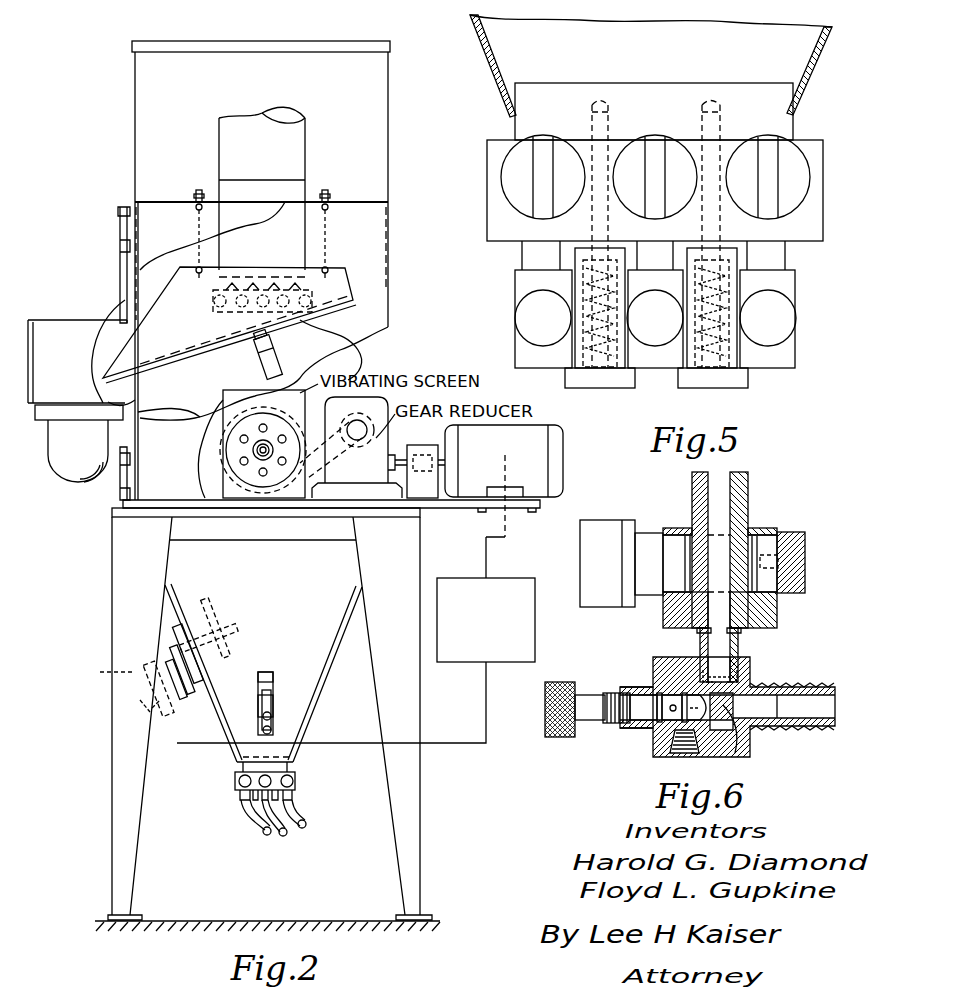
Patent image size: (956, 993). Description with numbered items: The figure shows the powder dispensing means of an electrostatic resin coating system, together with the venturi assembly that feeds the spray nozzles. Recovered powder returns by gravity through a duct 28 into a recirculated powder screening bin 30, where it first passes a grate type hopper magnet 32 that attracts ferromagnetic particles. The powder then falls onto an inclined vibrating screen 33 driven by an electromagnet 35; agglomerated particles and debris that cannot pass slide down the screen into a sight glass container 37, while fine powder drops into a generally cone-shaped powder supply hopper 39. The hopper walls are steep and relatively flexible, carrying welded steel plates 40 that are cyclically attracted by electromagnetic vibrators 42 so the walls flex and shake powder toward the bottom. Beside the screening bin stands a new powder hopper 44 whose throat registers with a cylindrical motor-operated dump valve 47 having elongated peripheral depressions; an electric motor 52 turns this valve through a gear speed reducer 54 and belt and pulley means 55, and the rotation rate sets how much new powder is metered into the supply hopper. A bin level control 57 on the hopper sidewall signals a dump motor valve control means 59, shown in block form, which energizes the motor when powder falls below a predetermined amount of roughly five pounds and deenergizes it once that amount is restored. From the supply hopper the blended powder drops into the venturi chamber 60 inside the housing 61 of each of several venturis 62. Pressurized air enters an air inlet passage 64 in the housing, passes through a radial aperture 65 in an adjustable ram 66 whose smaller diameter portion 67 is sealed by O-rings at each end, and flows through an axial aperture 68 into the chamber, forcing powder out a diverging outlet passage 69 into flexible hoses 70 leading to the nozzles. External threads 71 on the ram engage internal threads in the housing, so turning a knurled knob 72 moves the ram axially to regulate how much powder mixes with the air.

In FIG. 2, the duct 28 is at (306, 147).
In FIG. 2, the recirculated powder screening bin 30 is at (178, 240).
In FIG. 2, the grate type hopper magnet 32 is at (214, 312).
In FIG. 2, the inclined vibrating screen 33 is at (340, 328).
In FIG. 2, the electromagnet 35 is at (257, 357).
In FIG. 2, the sight glass container 37 is at (66, 462).
In FIG. 2, the powder supply hopper 39 is at (305, 712).
In FIG. 5, the powder supply hopper 39 is at (820, 68).
In FIG. 2, the steel plates 40 is at (268, 672).
In FIG. 2, the electromagnetic vibrators 42 is at (262, 700).
In FIG. 2, the new powder hopper 44 is at (272, 91).
In FIG. 2, the motor-operated dump valve 47 is at (234, 490).
In FIG. 2, the electric motor 52 is at (546, 470).
In FIG. 2, the gear speed reducer 54 is at (380, 490).
In FIG. 2, the belt and pulley means 55 is at (357, 450).
In FIG. 2, the bin level control 57 is at (142, 706).
In FIG. 2, the dump motor valve control means 59 is at (453, 662).
In FIG. 6, the venturi chamber 60 is at (750, 747).
In FIG. 5, the housing 61 is at (517, 276).
In FIG. 6, the housing 61 is at (750, 663).
In FIG. 2, the venturis 62 is at (234, 820).
In FIG. 5, the venturis 62 is at (510, 337).
In FIG. 6, the venturis 62 is at (646, 744).
In FIG. 6, the air inlet passage 64 is at (693, 719).
In FIG. 6, the radial aperture 65 is at (673, 705).
In FIG. 6, the adjustable ram 66 is at (589, 699).
In FIG. 6, the smaller diameter portion 67 is at (666, 698).
In FIG. 6, the axial aperture 68 is at (706, 740).
In FIG. 6, the diverging outlet passage 69 is at (835, 700).
In FIG. 2, the flexible hoses 70 is at (272, 832).
In FIG. 6, the external threads 71 is at (612, 724).
In FIG. 5, the knurled knob 72 is at (527, 306).
In FIG. 6, the knurled knob 72 is at (557, 738).